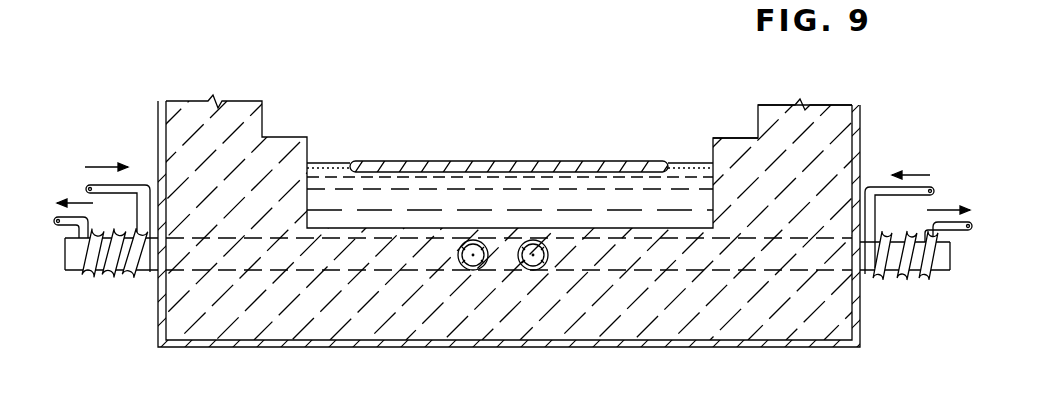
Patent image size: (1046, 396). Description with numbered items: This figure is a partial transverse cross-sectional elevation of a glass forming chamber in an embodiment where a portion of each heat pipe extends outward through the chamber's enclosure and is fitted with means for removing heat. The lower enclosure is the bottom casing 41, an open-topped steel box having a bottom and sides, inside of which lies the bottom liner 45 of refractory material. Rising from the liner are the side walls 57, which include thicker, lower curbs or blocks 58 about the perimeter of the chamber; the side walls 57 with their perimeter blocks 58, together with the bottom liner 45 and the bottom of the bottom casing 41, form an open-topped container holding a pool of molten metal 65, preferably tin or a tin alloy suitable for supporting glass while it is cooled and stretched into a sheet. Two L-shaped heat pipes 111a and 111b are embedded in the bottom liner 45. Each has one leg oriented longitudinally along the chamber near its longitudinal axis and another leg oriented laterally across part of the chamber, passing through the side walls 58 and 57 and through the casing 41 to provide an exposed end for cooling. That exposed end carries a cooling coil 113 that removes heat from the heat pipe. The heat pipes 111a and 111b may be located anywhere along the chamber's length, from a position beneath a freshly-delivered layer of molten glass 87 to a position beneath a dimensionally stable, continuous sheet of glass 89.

The bottom casing 41 is at (158, 122).
The bottom liner 45 is at (508, 328).
The side walls 57 is at (833, 115).
The curbs or blocks 58 is at (734, 137).
The pool of molten metal 65 is at (333, 163).
The freshly-delivered layer of molten glass 87 is at (514, 149).
The dimensionally stable, continuous sheet of glass 89 is at (520, 161).
The L-shaped heat pipe 111a is at (397, 270).
The L-shaped heat pipe 111b is at (655, 270).
The cooling coil 113 is at (897, 285).